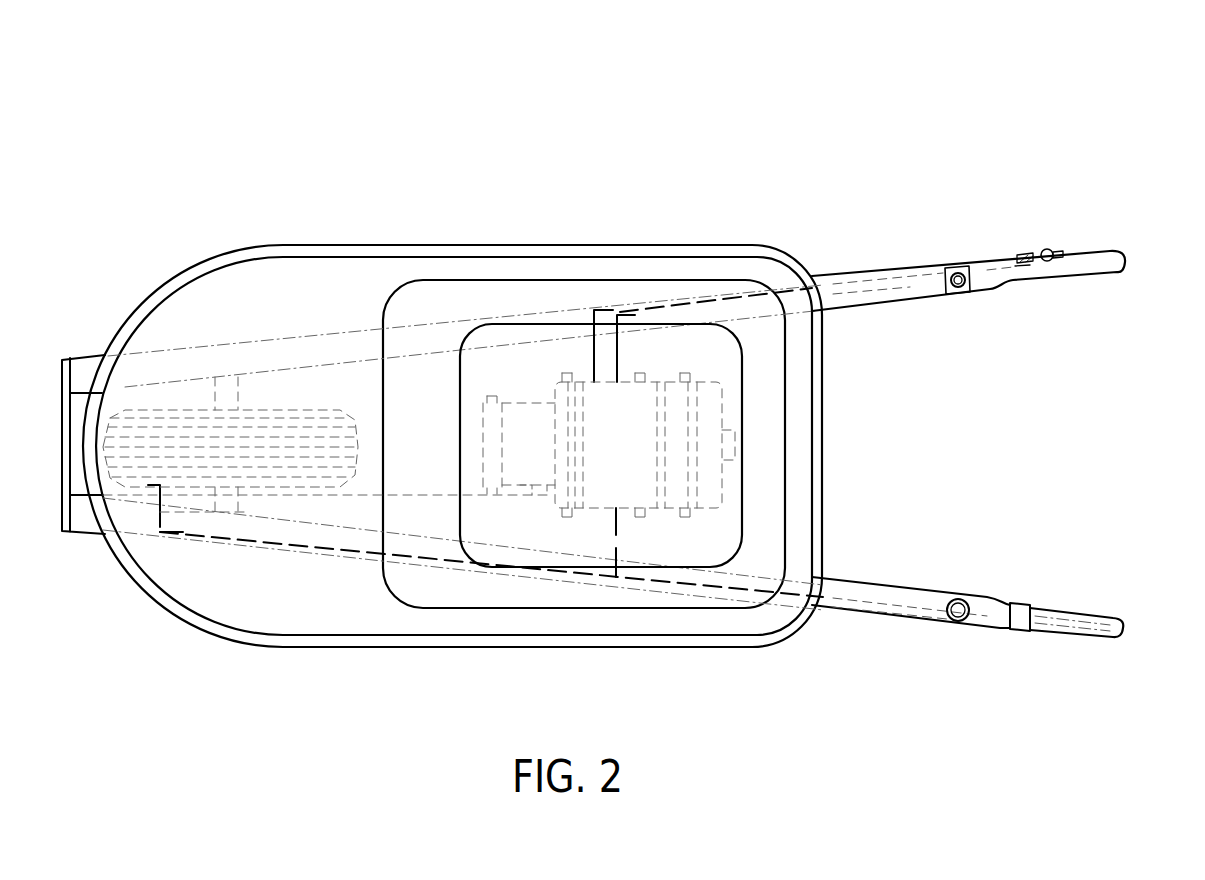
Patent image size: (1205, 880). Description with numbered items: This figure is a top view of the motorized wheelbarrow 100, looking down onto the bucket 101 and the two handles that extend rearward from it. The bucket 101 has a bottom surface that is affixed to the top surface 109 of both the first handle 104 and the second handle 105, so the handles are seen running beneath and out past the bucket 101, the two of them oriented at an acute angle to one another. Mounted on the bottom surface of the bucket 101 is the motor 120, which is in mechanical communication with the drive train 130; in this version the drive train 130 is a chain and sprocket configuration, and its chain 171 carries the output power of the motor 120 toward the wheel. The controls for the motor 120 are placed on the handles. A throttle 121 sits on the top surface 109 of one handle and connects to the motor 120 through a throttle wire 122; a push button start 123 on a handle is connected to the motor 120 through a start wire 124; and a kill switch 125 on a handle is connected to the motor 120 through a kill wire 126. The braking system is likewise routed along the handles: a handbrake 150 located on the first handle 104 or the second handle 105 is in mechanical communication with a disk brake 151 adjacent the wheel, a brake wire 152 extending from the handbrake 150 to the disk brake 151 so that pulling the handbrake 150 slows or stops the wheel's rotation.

The motorized wheelbarrow 100 is at (958, 122).
The bucket 101 is at (447, 243).
The first handle 104 is at (900, 584).
The second handle 105 is at (840, 274).
The top surface 109 is at (853, 306).
The motor 120 is at (663, 465).
The throttle 121 is at (1048, 249).
The throttle wire 122 is at (887, 270).
The push button start 123 is at (961, 287).
The start wire 124 is at (910, 290).
The kill switch 125 is at (962, 599).
The kill wire 126 is at (905, 612).
The drive train 130 is at (150, 517).
The handbrake 150 is at (1060, 629).
The disk brake 151 is at (150, 484).
The brake wire 152 is at (277, 543).
The chain 171 is at (362, 495).